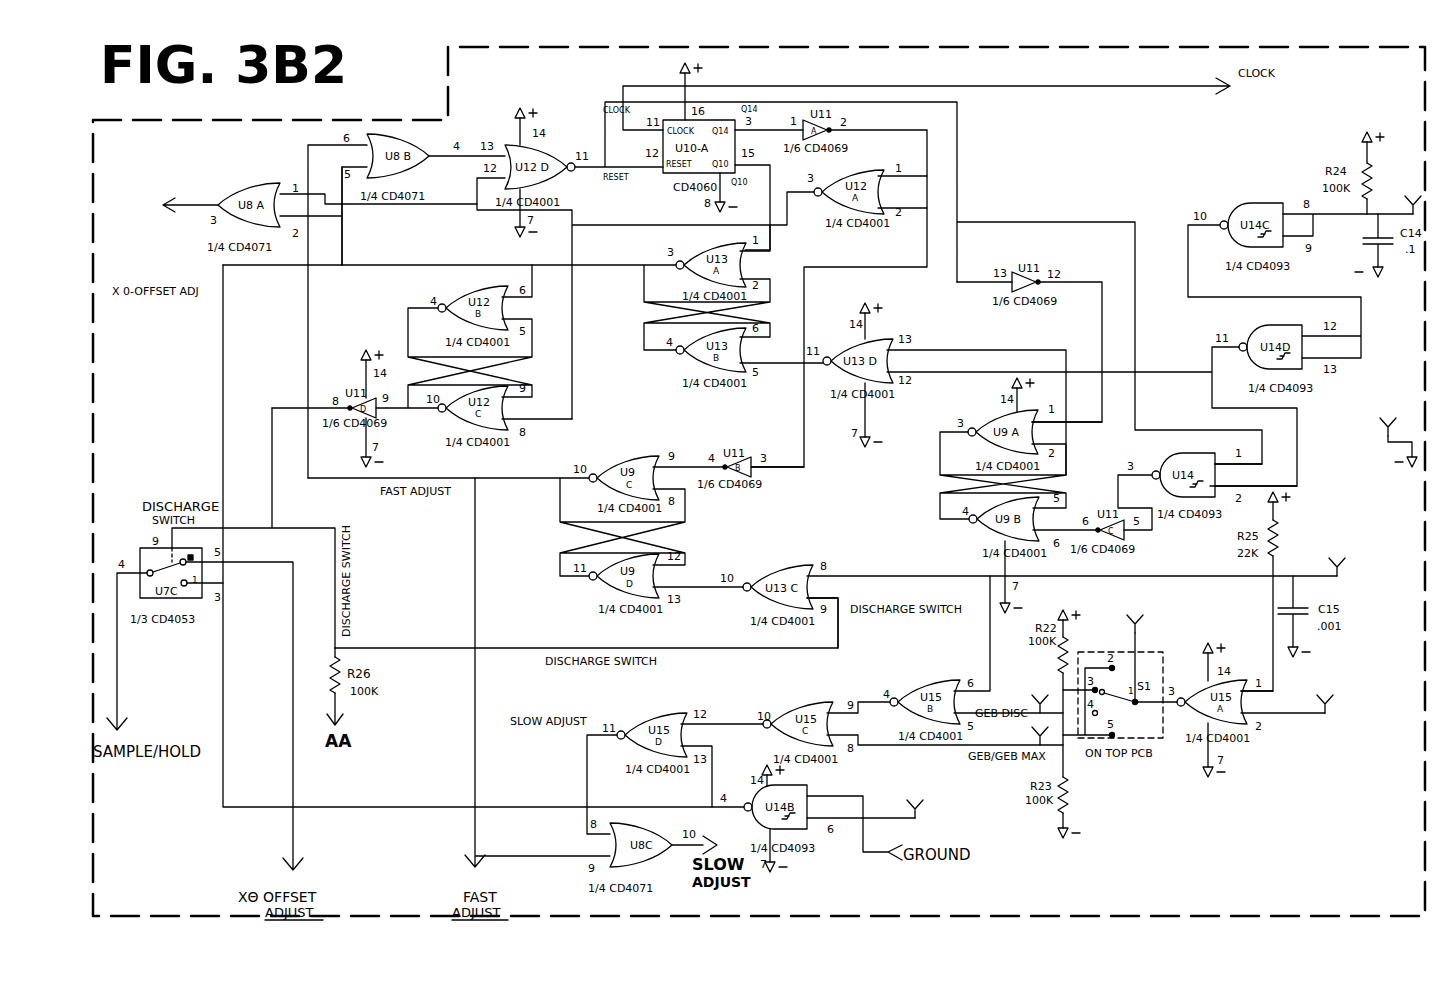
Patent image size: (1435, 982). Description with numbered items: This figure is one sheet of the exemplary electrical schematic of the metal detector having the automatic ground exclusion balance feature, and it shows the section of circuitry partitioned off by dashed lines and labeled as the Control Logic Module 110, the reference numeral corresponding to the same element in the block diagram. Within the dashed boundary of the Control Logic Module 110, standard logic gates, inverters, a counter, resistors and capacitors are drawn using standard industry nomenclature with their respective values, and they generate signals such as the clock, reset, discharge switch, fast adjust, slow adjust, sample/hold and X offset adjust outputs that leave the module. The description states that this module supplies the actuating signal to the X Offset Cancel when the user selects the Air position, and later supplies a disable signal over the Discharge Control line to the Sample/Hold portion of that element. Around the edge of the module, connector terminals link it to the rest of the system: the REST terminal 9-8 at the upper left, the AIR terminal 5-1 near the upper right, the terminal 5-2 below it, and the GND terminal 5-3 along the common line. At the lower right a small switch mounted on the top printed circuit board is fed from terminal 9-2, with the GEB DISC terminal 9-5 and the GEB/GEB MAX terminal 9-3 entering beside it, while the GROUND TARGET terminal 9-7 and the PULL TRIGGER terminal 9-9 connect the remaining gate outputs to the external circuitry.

The Control Logic Module 110 is at (438, 119).
The REST connector terminal 9-8 is at (190, 194).
The AIR connector terminal 5-1 is at (1410, 187).
The connector terminal 5-2 is at (1397, 434).
The GND connector terminal 5-3 is at (1337, 548).
The switch S1 connector terminal 9-2 is at (1133, 621).
The GEB DISC connector terminal 9-5 is at (1027, 699).
The GEB/GEB MAX connector terminal 9-3 is at (1030, 731).
The GROUND TARGET connector terminal 9-7 is at (883, 799).
The PULL TRIGGER connector terminal 9-9 is at (1328, 694).